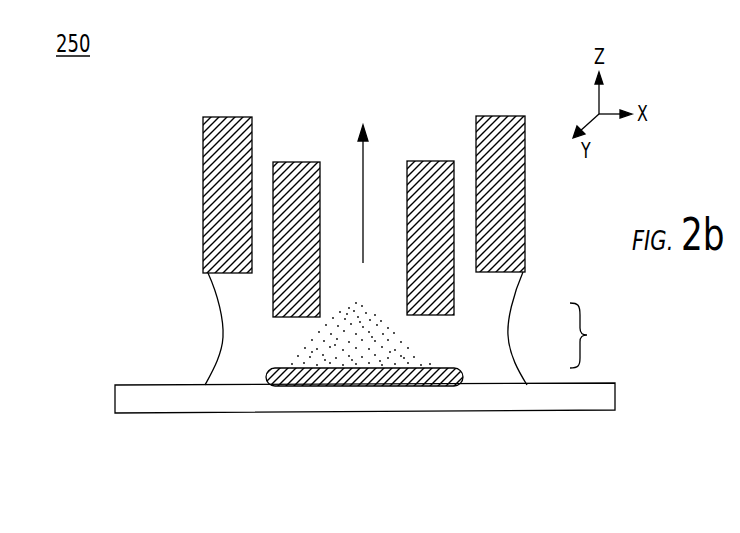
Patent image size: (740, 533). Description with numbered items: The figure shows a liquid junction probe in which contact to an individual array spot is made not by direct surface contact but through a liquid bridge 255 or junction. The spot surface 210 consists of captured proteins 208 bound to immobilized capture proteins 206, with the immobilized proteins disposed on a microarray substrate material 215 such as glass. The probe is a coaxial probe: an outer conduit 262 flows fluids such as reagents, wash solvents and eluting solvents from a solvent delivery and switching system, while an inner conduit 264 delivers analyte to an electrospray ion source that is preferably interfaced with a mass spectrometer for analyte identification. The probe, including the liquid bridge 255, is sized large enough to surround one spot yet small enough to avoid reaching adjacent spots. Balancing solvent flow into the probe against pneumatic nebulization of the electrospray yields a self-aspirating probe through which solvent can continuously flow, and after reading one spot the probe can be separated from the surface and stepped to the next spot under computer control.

The liquid bridge 255 is at (221, 323).
The outer conduit 262 is at (262, 140).
The inner conduit 264 is at (366, 152).
The microarray substrate material 215 is at (434, 414).
The immobilized capture proteins 206 is at (462, 378).
The captured proteins 208 is at (430, 357).
The spot surface 210 is at (602, 335).